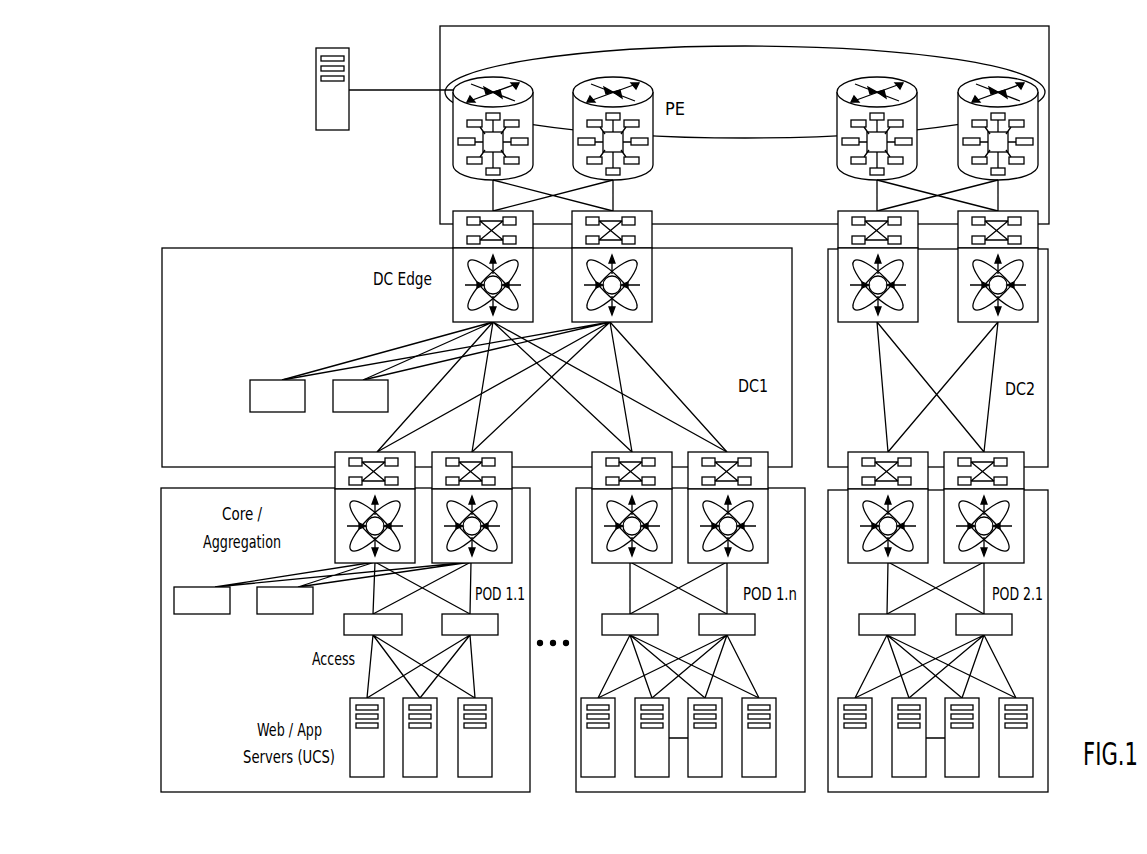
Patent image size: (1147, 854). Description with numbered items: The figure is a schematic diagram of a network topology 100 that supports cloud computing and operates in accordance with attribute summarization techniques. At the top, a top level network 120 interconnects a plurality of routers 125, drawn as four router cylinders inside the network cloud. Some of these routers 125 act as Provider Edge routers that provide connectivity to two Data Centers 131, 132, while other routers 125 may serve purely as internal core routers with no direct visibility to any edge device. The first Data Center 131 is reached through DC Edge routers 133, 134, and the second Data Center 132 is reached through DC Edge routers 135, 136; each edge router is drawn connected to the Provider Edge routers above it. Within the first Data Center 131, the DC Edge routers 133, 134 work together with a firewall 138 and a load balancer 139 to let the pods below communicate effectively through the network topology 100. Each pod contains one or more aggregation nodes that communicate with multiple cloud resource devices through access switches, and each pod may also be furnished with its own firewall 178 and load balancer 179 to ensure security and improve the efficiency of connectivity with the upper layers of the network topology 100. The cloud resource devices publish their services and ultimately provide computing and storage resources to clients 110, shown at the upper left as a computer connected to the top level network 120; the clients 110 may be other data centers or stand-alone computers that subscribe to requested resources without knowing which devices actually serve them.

The network topology 100 is at (1082, 113).
The clients 110 is at (312, 110).
The top level network 120 is at (1049, 205).
The routers 125 is at (533, 105).
The Data Center 131 is at (162, 326).
The Data Center 132 is at (1048, 365).
The DC Edge router 133 is at (453, 236).
The DC Edge router 134 is at (652, 265).
The DC Edge router 135 is at (839, 212).
The DC Edge router 136 is at (1038, 237).
The firewall 138 is at (250, 396).
The load balancer 139 is at (355, 412).
The firewall 178 is at (210, 614).
The load balancer 179 is at (288, 614).